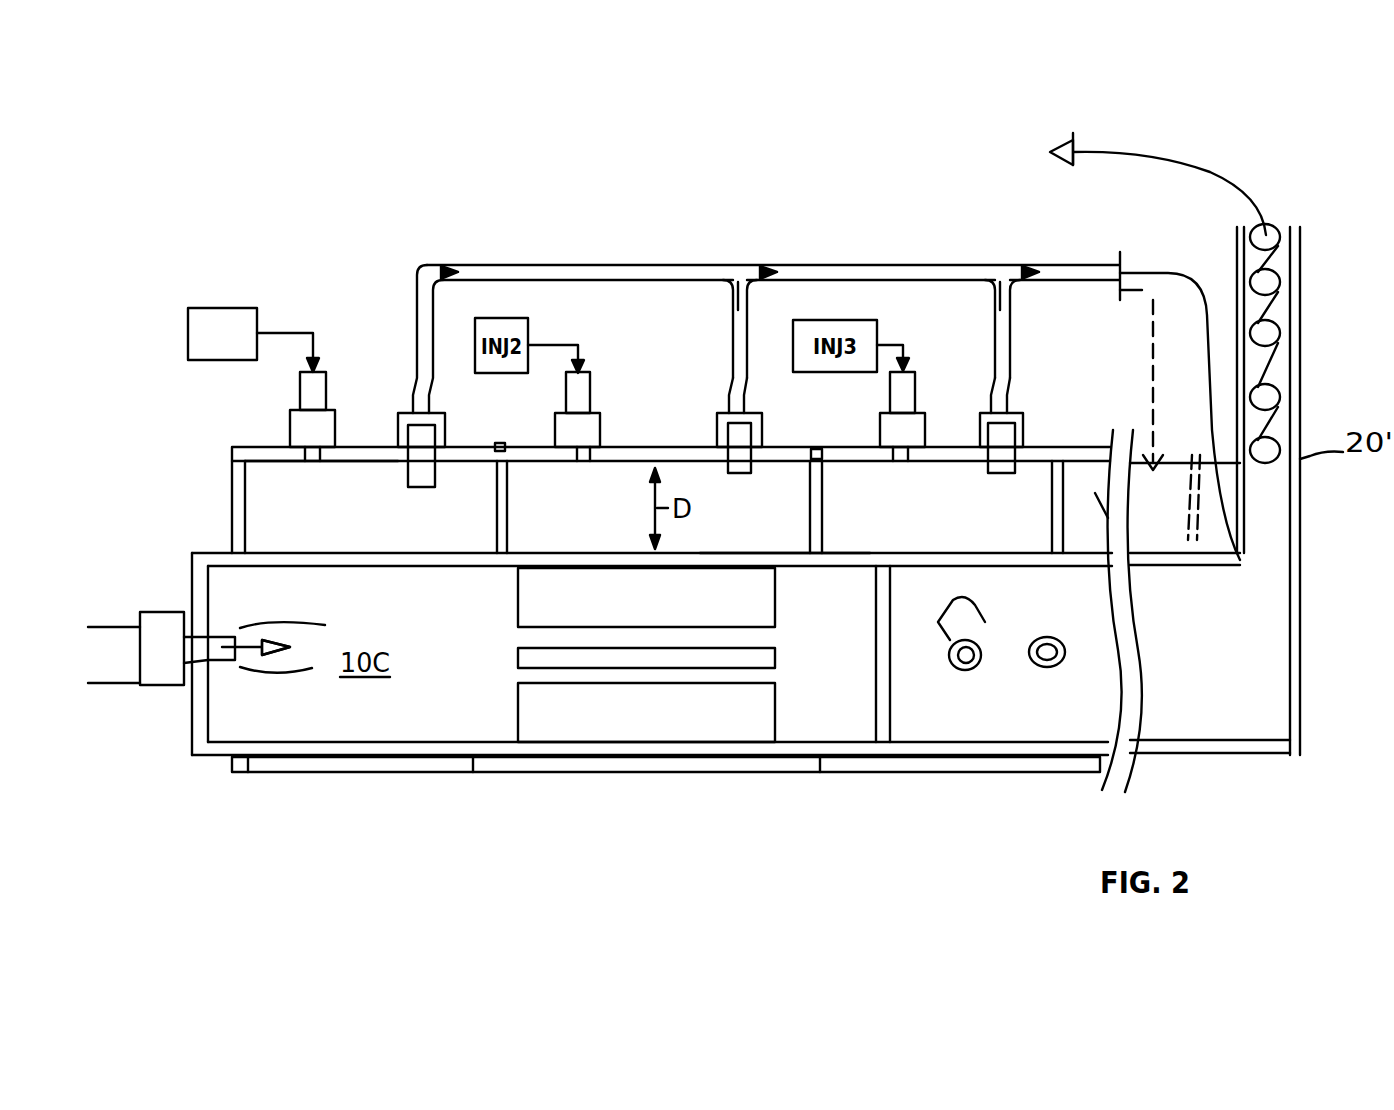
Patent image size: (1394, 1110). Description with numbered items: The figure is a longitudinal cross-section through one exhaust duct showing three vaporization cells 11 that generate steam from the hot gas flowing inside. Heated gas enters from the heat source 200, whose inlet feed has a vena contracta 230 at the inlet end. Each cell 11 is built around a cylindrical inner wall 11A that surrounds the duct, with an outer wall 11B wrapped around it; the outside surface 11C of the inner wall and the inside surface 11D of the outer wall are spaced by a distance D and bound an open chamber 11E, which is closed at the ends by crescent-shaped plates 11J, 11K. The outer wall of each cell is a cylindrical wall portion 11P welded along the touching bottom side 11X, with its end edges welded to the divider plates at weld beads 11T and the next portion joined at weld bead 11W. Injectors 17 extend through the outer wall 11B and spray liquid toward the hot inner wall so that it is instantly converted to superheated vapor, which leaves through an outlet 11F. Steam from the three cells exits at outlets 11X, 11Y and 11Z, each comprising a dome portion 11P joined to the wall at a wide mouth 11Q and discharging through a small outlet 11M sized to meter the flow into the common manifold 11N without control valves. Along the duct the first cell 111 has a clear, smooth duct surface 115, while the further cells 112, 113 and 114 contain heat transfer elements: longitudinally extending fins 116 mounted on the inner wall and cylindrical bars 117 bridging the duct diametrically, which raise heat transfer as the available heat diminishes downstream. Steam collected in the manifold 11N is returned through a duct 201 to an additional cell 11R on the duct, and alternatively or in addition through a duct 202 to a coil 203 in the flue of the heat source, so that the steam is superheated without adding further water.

The outer wall 11B is at (232, 455).
The end plate 11J is at (232, 492).
The injector 17 is at (190, 350).
The open chamber 11E is at (313, 422).
The outlet 11X is at (438, 437).
The outlet 11F is at (418, 472).
The inside surface 11D is at (340, 462).
The outside surface 11C is at (360, 550).
The inner wall 11A is at (366, 566).
The common manifold 11N is at (893, 277).
The weld bead 11W is at (510, 446).
The weld bead 11T is at (815, 462).
The outlet 11Y is at (713, 430).
The cylindrical wall portion 11P is at (350, 768).
The small outlet 11M is at (1000, 413).
The outlet 11Z is at (1080, 400).
The mouth 11Q is at (993, 458).
The end plate 11K is at (808, 523).
The further cell 113 is at (1018, 540).
The further cell 112 is at (780, 542).
The first cell 111 is at (258, 542).
The duct surface 115 is at (300, 562).
The fins 116 is at (537, 607).
The bars 117 is at (972, 672).
The vaporization cell 11 is at (1135, 772).
The additional cell 11R is at (1140, 535).
The heat source 200 is at (100, 655).
The vena contracta 230 is at (168, 690).
The duct 202 is at (1183, 288).
The duct 201 is at (1150, 346).
The further cell 114 is at (1162, 476).
The coil 203 is at (1265, 275).